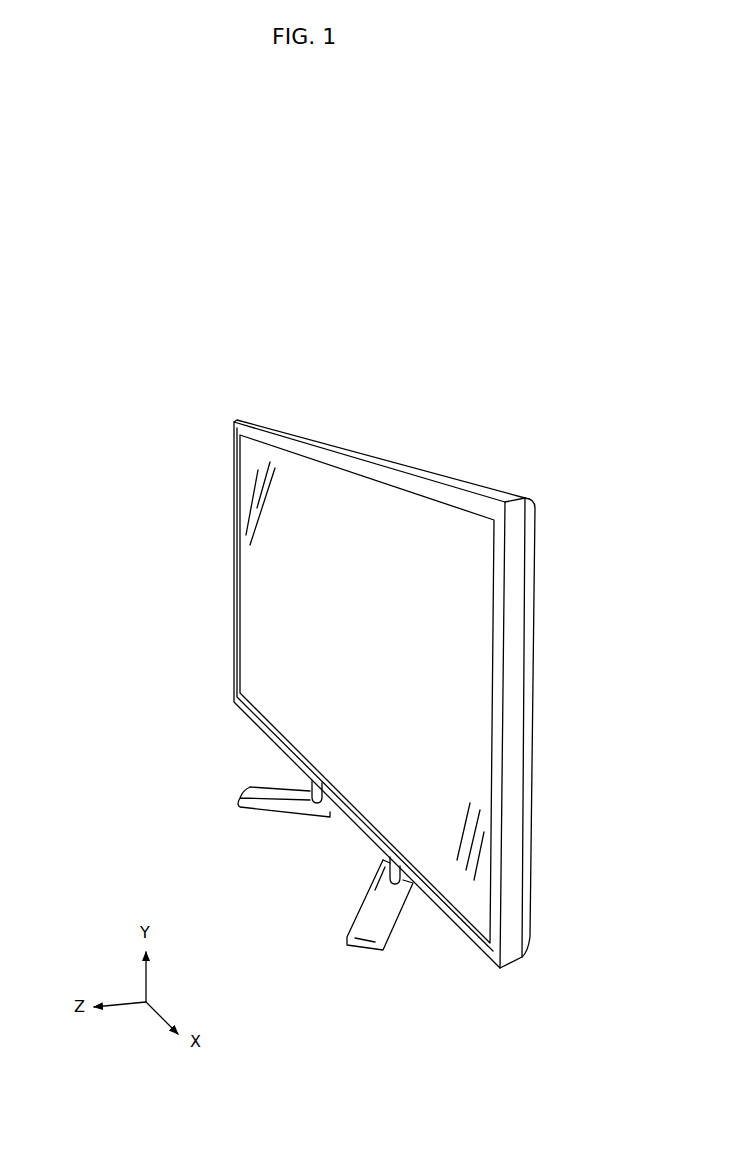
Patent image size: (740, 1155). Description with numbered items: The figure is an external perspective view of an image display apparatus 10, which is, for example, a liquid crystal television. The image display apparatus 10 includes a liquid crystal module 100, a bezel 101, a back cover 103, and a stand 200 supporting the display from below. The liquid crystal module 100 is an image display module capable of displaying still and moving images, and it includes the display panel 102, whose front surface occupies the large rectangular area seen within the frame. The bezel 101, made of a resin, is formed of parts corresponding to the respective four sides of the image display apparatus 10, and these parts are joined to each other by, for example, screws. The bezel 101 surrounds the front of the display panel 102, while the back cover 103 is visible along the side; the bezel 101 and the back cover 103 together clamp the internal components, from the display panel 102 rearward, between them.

The image display apparatus 10 is at (228, 337).
The liquid crystal module 100 is at (397, 439).
The bezel 101 is at (462, 481).
The display panel 102 is at (314, 482).
The back cover 103 is at (528, 548).
The stand 200 is at (242, 802).